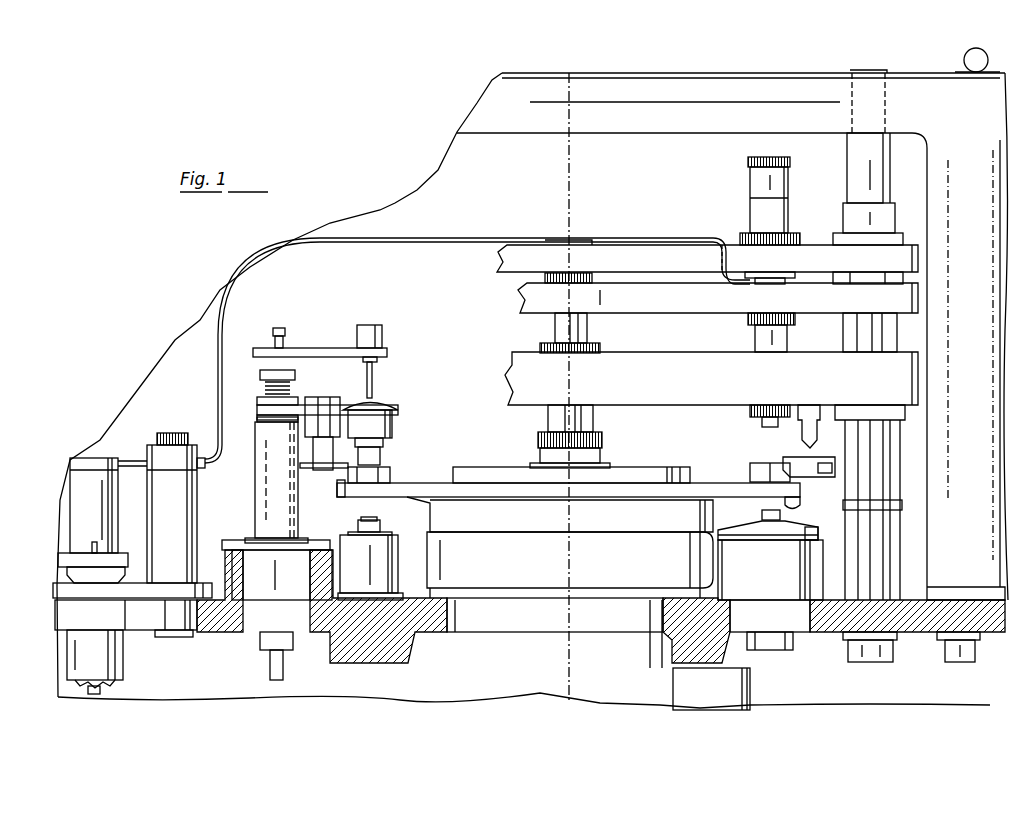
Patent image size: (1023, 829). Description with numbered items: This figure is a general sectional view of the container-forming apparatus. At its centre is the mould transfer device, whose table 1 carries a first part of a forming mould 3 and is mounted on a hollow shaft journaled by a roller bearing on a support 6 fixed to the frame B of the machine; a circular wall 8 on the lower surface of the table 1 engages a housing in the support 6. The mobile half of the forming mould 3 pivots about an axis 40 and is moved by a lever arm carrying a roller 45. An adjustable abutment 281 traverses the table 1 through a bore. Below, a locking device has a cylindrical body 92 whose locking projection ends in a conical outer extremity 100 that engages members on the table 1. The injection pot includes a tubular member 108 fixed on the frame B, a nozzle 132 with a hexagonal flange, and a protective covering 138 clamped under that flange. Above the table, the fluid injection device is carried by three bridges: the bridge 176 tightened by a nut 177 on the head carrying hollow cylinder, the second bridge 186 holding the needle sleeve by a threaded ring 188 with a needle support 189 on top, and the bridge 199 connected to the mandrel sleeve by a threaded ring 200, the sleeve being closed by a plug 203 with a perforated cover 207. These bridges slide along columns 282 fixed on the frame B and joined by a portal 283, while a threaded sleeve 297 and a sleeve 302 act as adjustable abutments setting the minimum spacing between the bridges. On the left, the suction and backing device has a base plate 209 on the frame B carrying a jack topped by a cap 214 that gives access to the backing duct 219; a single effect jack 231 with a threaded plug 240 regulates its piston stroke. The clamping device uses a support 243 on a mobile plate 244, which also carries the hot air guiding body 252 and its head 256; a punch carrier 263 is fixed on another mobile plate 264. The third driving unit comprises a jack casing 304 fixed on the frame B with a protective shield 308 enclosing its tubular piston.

The table 1 is at (412, 490).
The forming mould 3 is at (392, 476).
The support 6 is at (570, 600).
The circular wall 8 is at (560, 514).
The pivoting axis 40 is at (800, 504).
The roller 45 is at (833, 462).
The body 92 is at (370, 567).
The outer extremity of locking projection 100 is at (358, 524).
The member 108 is at (770, 585).
The nozzle 132 is at (764, 512).
The protective covering 138 is at (818, 538).
The bridge 176 is at (711, 378).
The nut 177 is at (750, 415).
The second bridge 186 is at (718, 298).
The threaded ring 188 is at (748, 322).
The needle support 189 is at (782, 280).
The bridge 199 is at (707, 256).
The threaded ring 200 is at (759, 228).
The plug 203 is at (750, 184).
The cover 207 is at (748, 162).
The base plate 209 is at (126, 618).
The cap 214 is at (161, 508).
The backing duct 219 is at (428, 243).
The single effect jack 231 is at (110, 661).
The threaded plug 240 is at (90, 560).
The support 243 is at (323, 460).
The mobile plate 244 is at (262, 407).
The body 252 is at (395, 425).
The head 256 is at (383, 460).
The punch carrier 263 is at (384, 337).
The mobile plate 264 is at (332, 342).
The adjustable abutment 281 is at (602, 458).
The columns 282 is at (845, 155).
The portal 283 is at (532, 378).
The threaded sleeve 297 is at (600, 346).
The sleeve 302 is at (560, 285).
The casing 304 is at (322, 610).
The protective shield 308 is at (265, 486).
The frame B is at (830, 630).